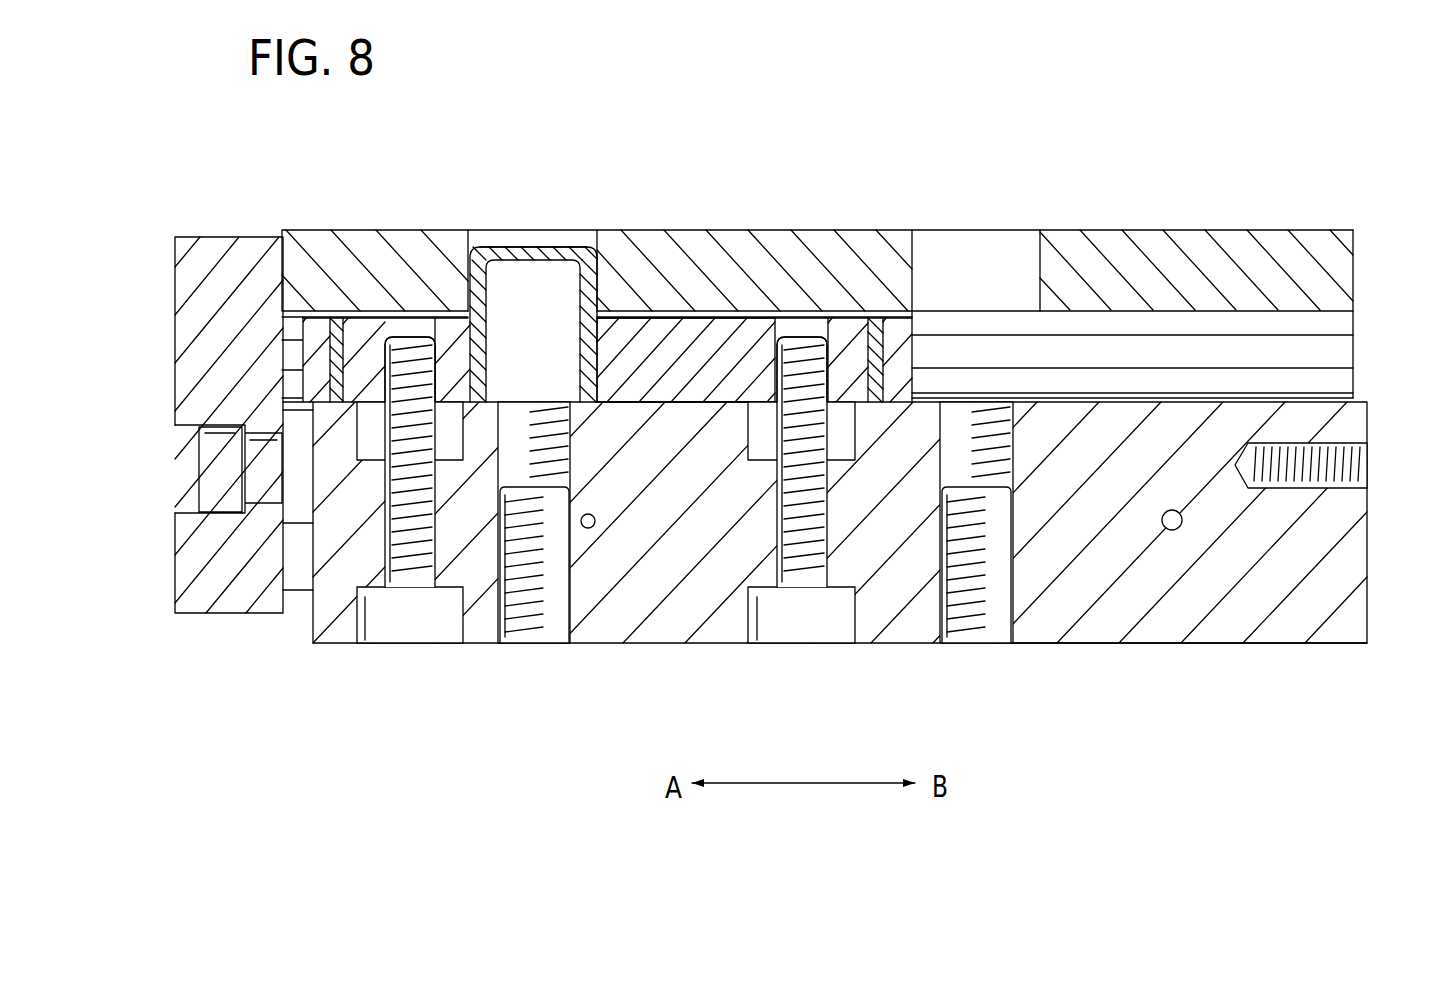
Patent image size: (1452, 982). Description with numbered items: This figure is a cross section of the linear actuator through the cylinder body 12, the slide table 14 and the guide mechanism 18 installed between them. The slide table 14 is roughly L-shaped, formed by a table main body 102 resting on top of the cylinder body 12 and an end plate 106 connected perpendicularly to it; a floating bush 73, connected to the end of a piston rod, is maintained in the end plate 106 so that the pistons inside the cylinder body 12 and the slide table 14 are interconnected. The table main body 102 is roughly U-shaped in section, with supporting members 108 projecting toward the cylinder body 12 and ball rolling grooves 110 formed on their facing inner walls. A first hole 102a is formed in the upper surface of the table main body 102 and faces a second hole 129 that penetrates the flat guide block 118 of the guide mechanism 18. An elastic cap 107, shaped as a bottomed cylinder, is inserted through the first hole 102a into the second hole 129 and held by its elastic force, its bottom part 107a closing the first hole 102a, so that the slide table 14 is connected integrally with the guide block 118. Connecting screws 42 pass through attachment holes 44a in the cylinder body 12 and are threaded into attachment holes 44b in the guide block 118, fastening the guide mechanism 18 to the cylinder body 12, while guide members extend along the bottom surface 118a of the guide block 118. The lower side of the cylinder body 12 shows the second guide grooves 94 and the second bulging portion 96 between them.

The cylinder body 12 is at (1215, 650).
The slide table 14 is at (1269, 228).
The guide mechanism 18 is at (837, 300).
The connecting screw 42 is at (450, 630).
The attachment hole 44a is at (432, 545).
The attachment hole 44b is at (415, 365).
The floating bush 73 is at (215, 474).
The second guide groove 94 is at (1156, 398).
The second bulging portion 96 is at (1080, 602).
The table main body 102 is at (717, 247).
The first hole 102a is at (597, 243).
The end plate 106 is at (172, 322).
The cap 107 is at (490, 243).
The bottom part 107a is at (517, 252).
The supporting member 108 is at (1338, 325).
The ball rolling groove 110 is at (1338, 358).
The guide block 118 is at (664, 404).
The bottom surface 118a is at (712, 405).
The second hole 129 is at (578, 350).